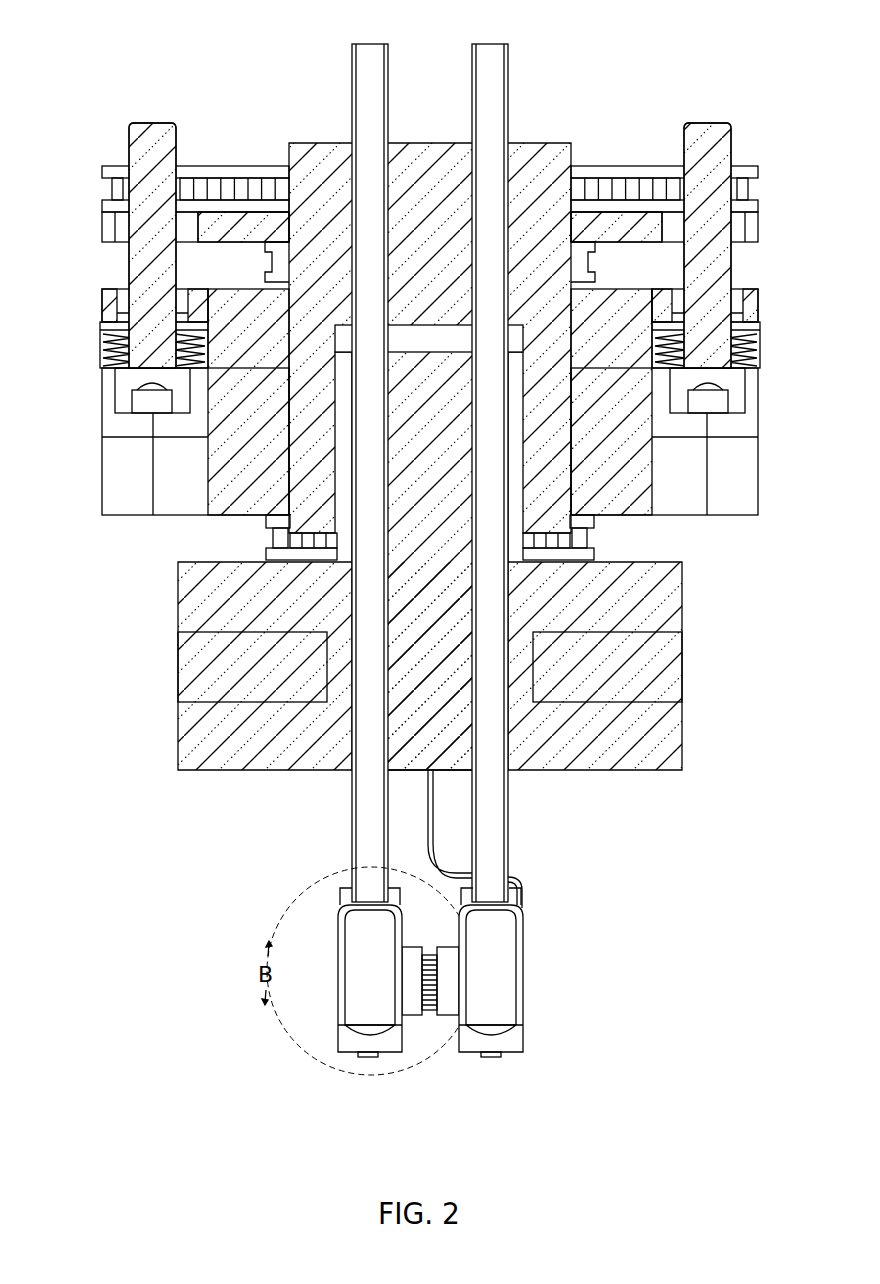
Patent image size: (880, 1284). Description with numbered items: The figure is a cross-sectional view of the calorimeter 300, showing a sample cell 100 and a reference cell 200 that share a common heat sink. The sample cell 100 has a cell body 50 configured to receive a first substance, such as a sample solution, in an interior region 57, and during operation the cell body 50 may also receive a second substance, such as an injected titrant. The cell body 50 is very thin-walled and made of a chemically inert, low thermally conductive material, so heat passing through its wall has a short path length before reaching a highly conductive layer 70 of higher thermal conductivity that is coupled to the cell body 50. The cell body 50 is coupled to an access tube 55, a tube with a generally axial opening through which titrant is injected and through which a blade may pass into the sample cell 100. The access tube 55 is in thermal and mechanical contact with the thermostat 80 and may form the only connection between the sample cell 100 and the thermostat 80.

The calorimeter 300 is at (128, 95).
The thermostat 80 is at (178, 759).
The access tube 55 is at (352, 806).
The sample cell 100 is at (336, 947).
The cell body 50 is at (340, 930).
The interior region 57 is at (333, 948).
The highly conductive layer 70 is at (337, 997).
The reference cell 200 is at (523, 955).